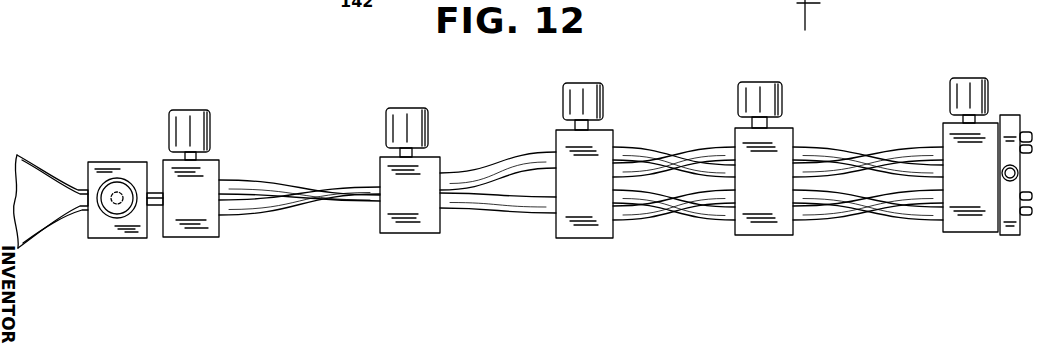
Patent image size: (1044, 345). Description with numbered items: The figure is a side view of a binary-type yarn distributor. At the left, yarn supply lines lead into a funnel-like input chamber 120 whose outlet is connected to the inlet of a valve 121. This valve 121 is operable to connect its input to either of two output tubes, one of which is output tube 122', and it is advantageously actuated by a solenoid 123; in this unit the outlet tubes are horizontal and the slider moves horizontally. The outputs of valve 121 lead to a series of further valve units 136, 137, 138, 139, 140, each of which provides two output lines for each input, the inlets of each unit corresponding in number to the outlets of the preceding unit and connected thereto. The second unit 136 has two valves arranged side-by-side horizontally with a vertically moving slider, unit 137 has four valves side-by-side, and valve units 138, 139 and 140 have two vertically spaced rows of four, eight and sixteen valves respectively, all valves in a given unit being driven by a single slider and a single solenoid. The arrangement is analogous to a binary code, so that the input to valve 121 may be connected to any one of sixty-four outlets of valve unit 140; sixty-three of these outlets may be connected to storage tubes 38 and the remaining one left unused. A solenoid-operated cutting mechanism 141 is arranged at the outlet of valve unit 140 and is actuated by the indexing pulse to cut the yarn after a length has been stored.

The funnel-like input chamber 120 is at (33, 178).
The valve 121 is at (113, 231).
The output tube 122' is at (162, 228).
The solenoid 123 is at (117, 188).
The second valve unit 136 is at (203, 234).
The valve unit 137 is at (425, 226).
The valve unit 138 is at (575, 233).
The valve unit 139 is at (780, 227).
The valve unit 140 is at (977, 223).
The solenoid-operated cutting mechanism 141 is at (1012, 231).
The storage tubes 38 is at (1028, 128).